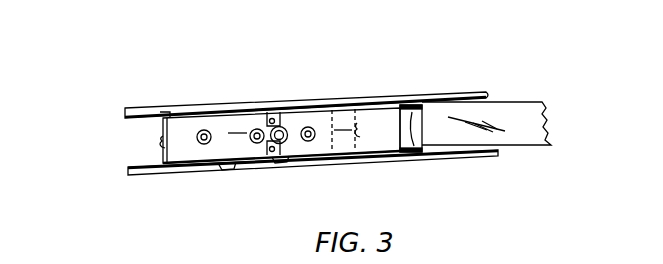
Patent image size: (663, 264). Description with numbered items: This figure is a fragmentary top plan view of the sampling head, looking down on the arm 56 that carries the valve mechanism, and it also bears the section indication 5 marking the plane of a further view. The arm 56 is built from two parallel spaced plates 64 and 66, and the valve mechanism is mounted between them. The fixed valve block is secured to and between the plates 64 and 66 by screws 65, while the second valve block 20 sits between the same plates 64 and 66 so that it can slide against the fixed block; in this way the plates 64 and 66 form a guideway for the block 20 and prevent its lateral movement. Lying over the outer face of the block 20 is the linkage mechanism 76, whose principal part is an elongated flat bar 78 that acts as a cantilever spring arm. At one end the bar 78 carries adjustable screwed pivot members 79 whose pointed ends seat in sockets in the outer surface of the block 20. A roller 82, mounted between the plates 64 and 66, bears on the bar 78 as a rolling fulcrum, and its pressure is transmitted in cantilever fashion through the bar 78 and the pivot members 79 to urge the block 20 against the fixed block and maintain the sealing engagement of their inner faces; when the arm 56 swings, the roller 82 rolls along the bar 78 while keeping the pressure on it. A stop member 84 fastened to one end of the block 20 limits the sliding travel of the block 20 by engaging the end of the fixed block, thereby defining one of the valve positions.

The section arrows 5 is at (237, 143).
The second valve block 20 is at (188, 128).
The arm 56 is at (110, 163).
The plate 64 is at (134, 177).
The screws 65 is at (277, 110).
The plate 66 is at (148, 112).
The linkage mechanism 76 is at (522, 147).
The elongated flat bar 78 is at (503, 118).
The pivot members 79 is at (282, 148).
The roller 82 is at (417, 152).
The stop member 84 is at (163, 118).